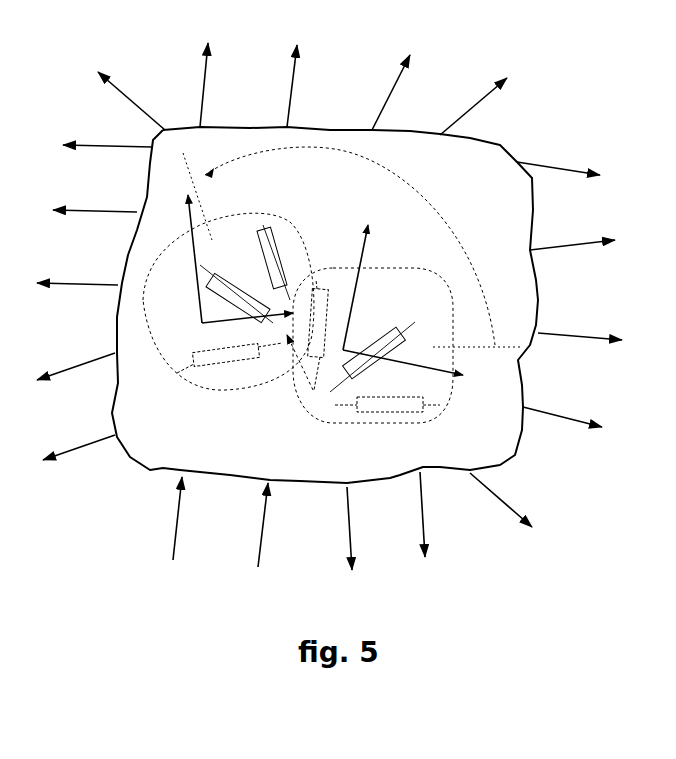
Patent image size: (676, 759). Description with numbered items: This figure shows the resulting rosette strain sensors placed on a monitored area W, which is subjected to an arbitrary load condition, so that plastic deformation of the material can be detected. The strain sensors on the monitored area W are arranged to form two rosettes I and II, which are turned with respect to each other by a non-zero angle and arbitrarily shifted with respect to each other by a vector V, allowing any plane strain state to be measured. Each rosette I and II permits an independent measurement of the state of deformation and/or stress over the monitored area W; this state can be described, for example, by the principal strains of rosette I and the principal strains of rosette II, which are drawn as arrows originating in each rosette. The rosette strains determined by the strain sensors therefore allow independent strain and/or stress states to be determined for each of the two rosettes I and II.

The monitored area W is at (329, 306).
The rosette I is at (373, 345).
The rosette II is at (228, 301).
The vector V is at (307, 331).